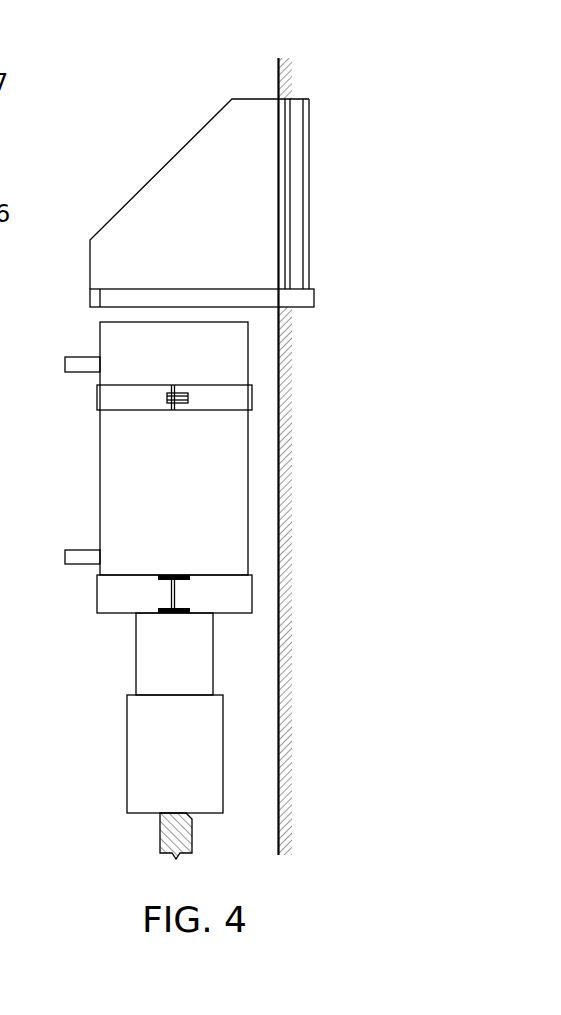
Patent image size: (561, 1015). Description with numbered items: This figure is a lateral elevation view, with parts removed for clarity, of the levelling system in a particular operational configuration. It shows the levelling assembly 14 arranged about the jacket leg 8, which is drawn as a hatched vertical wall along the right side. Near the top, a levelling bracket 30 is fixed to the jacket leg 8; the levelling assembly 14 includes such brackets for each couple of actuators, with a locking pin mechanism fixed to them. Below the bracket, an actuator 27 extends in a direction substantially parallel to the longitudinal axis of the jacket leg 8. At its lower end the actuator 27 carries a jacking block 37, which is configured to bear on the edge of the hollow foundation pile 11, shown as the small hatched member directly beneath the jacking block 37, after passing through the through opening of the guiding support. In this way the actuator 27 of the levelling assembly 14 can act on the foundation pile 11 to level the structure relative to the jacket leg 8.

The jacket leg 8 is at (284, 475).
The levelling assembly 14 is at (197, 157).
The levelling bracket 30 is at (132, 156).
The actuator 27 is at (130, 480).
The jacking block 37 is at (152, 741).
The hollow foundation pile 11 is at (170, 832).